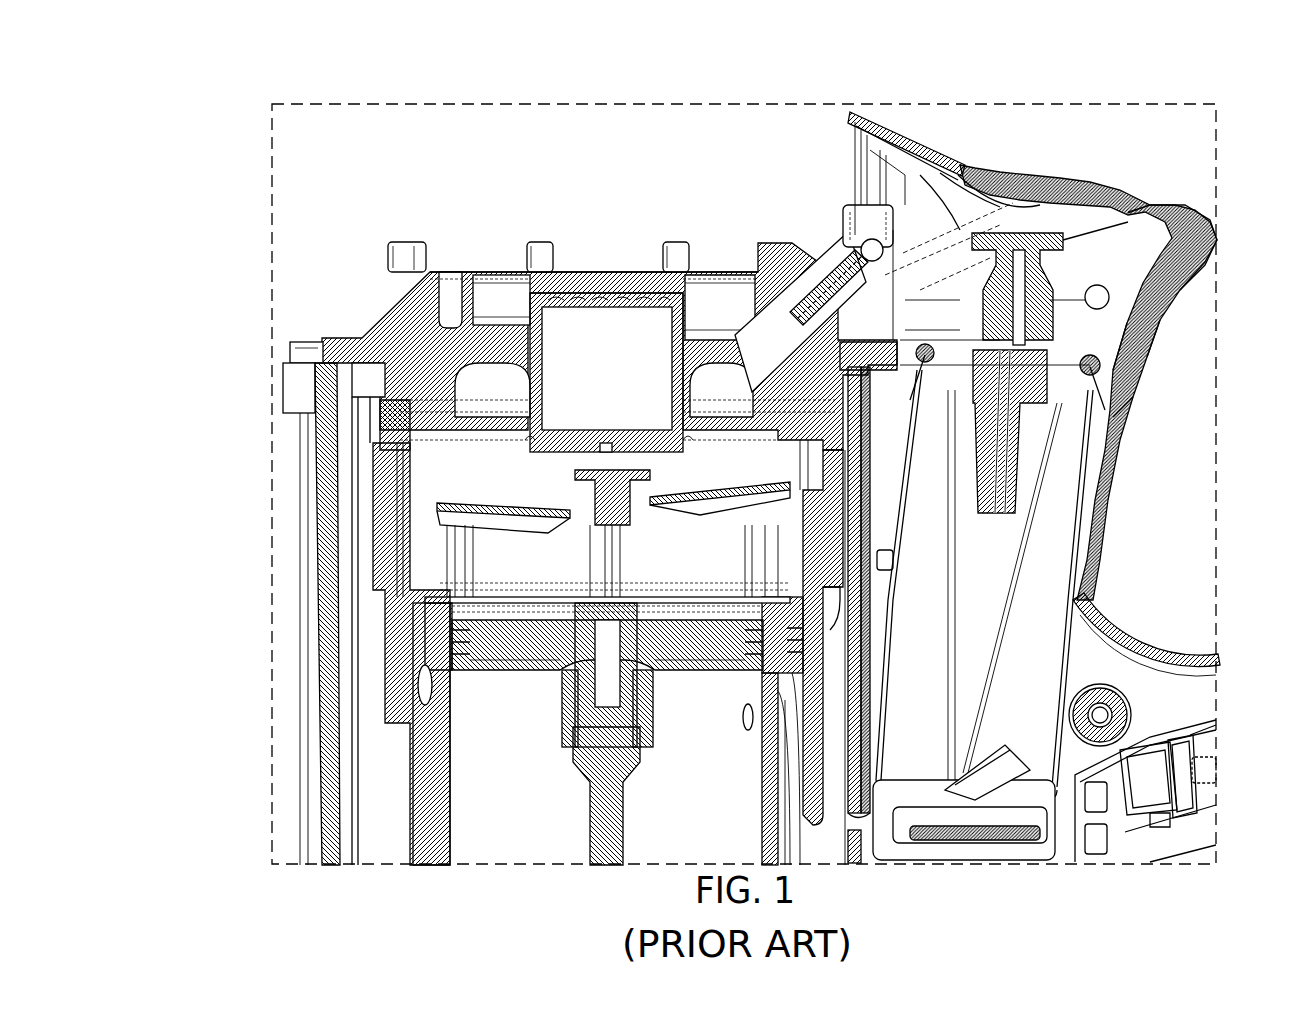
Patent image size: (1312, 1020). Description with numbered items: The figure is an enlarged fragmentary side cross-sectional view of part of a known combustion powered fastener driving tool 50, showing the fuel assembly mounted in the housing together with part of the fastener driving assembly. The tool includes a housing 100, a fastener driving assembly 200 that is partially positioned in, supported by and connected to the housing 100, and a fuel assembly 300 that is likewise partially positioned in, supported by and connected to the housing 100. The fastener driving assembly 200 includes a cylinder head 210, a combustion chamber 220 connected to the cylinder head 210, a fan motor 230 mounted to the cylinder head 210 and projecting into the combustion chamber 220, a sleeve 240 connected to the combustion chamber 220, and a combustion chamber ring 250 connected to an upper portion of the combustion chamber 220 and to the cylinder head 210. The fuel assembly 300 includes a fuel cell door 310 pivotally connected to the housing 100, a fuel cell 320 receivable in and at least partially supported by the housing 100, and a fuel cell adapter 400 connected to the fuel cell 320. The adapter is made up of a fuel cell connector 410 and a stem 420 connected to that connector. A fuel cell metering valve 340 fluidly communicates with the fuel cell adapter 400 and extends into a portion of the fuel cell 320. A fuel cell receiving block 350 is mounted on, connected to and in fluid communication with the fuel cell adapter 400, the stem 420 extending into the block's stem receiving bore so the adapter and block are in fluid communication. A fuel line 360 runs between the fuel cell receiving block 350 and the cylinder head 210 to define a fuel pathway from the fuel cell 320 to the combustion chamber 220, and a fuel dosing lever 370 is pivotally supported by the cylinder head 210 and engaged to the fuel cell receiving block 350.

The combustion powered fastener driving tool 50 is at (425, 179).
The housing 100 is at (327, 652).
The fastener driving assembly 200 is at (376, 293).
The cylinder head 210 is at (436, 270).
The combustion chamber 220 is at (370, 485).
The fan motor 230 is at (568, 490).
The sleeve 240 is at (410, 797).
The combustion chamber ring 250 is at (382, 417).
The fuel assembly 300 is at (998, 150).
The fuel cell door 310 is at (1125, 193).
The fuel cell 320 is at (1100, 583).
The fuel cell metering valve 340 is at (1113, 417).
The fuel cell receiving block 350 is at (1133, 193).
The fuel line 360 is at (918, 140).
The fuel dosing lever 370 is at (1045, 168).
The fuel cell adapter 400 is at (1172, 310).
The fuel cell connector 410 is at (1127, 350).
The stem 420 is at (1065, 245).